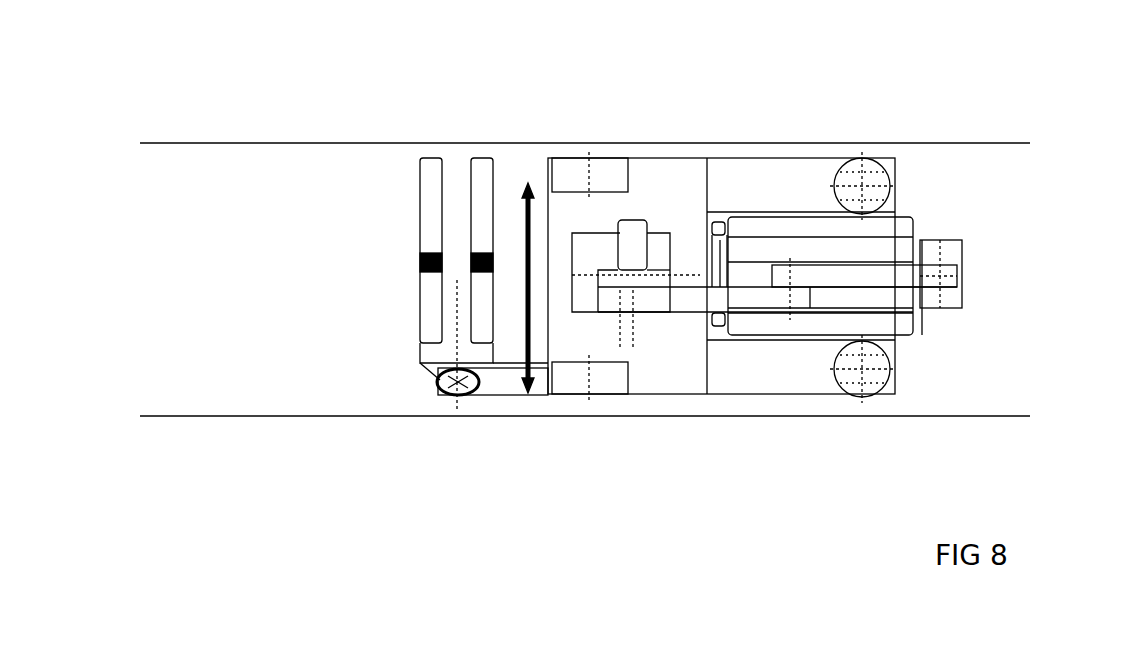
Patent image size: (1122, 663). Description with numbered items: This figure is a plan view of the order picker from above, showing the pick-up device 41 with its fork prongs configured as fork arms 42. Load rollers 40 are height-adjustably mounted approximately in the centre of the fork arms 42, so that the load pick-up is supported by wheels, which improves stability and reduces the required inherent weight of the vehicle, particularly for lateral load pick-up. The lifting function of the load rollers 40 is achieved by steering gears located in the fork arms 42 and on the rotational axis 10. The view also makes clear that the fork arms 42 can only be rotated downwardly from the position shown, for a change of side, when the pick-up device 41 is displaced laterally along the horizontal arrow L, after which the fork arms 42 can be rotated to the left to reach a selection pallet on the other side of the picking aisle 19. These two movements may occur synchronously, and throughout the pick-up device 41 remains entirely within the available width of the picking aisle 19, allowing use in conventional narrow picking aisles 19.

The rotational axis 10 is at (463, 393).
The picking aisle 19 is at (1010, 283).
The load rollers 40 is at (475, 270).
The pick-up device 41 is at (420, 362).
The fork arms 42 is at (468, 162).
The horizontal arrow L is at (527, 272).